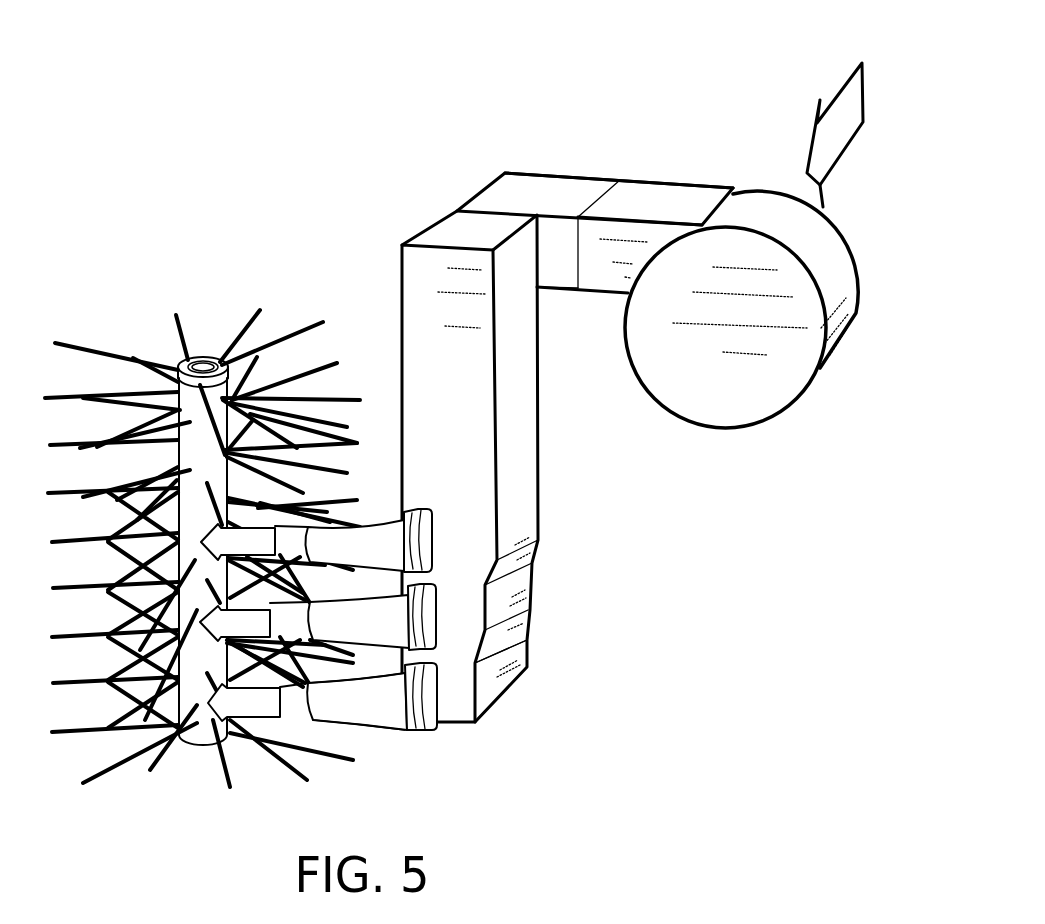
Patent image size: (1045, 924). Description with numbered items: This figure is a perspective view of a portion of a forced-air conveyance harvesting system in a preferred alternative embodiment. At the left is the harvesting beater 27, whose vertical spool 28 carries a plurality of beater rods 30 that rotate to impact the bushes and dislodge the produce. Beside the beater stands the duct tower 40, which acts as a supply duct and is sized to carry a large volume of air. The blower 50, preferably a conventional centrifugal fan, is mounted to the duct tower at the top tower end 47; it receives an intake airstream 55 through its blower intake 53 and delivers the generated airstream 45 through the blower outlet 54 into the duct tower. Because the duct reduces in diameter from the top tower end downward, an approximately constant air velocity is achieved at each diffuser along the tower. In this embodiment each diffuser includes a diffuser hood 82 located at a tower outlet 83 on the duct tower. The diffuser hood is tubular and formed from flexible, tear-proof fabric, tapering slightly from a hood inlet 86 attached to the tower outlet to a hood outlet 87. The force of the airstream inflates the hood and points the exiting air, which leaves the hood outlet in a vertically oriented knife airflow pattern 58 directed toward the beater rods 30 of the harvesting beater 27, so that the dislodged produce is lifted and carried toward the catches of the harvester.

The harvesting beater 27 is at (260, 274).
The vertical spool 28 is at (207, 742).
The beater rods 30 is at (357, 497).
The duct tower 40 is at (564, 441).
The airstream 45 is at (255, 740).
The top tower end 47 is at (513, 290).
The blower 50 is at (738, 400).
The blower intake 53 is at (757, 187).
The blower outlet 54 is at (686, 201).
The intake airstream 55 is at (843, 90).
The knife airflow pattern 58 is at (498, 690).
The diffuser hood 82 is at (355, 703).
The tower outlet 83 is at (428, 720).
The hood inlet 86 is at (410, 727).
The hood outlet 87 is at (315, 720).